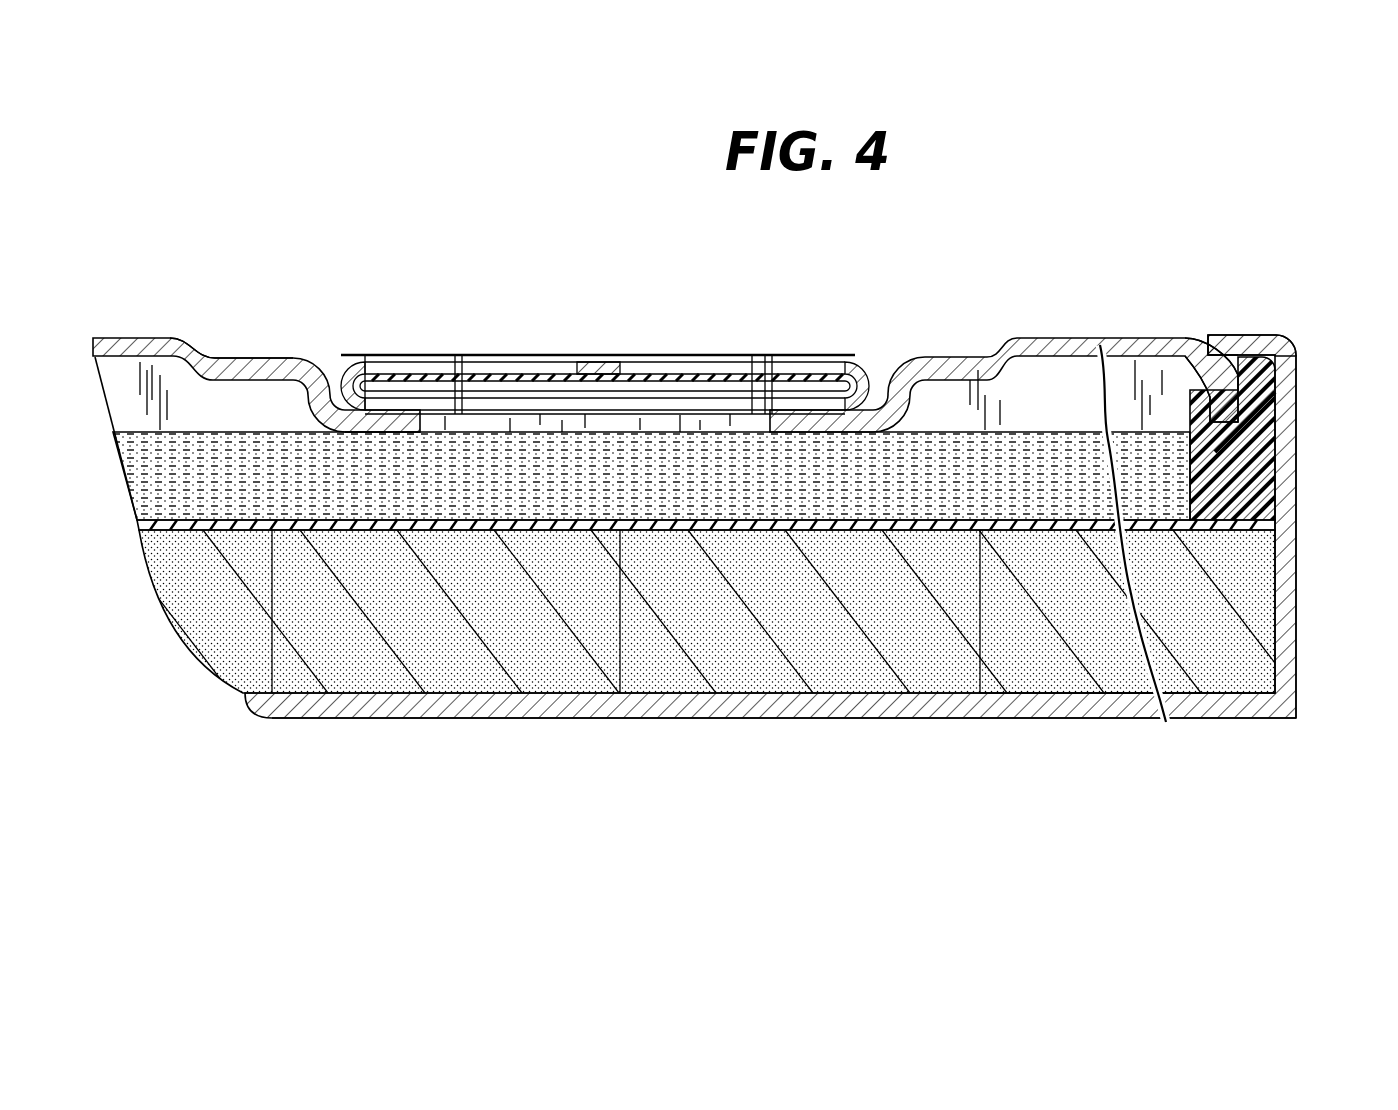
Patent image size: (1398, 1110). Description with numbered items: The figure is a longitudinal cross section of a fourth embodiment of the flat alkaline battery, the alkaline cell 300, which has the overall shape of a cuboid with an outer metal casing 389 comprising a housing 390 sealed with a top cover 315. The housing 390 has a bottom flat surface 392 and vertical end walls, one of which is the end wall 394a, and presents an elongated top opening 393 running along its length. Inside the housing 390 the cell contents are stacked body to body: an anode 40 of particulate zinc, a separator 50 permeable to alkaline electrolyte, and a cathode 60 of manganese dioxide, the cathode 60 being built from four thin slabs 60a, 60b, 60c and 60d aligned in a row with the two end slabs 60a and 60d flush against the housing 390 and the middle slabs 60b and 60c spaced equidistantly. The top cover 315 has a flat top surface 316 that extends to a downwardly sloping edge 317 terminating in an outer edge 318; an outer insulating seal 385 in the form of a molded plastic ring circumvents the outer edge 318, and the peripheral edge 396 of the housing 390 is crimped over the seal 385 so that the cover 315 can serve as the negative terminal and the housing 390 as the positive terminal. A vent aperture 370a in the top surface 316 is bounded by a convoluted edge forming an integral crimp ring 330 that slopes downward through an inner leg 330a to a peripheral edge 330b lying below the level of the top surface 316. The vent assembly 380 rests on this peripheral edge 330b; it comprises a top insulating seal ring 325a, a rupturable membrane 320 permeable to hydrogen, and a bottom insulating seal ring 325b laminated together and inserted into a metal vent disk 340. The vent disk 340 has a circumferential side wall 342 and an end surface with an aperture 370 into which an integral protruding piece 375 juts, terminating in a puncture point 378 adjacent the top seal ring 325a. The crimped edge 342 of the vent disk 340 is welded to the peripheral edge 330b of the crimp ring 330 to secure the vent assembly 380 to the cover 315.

The flat battery (alkaline cell) 300 is at (198, 208).
The convoluted edge / crimp ring 330 is at (145, 335).
The inner leg 330a is at (230, 340).
The peripheral edge 330b is at (345, 425).
The vent disk 340 is at (375, 338).
The top insulating seal ring 325a is at (458, 345).
The bottom insulating seal ring 325b is at (395, 420).
The rupturable membrane 320 is at (530, 428).
The puncture point 378 is at (597, 362).
The protruding piece 375 is at (637, 378).
The aperture 370 is at (705, 391).
The vent aperture 370a is at (528, 430).
The seal assembly / vent assembly 380 is at (822, 355).
The top cover 315 is at (1012, 340).
The flat top surface 316 is at (1100, 345).
The downwardly sloping edge 317 is at (1178, 340).
The top opening 393 is at (1185, 350).
The peripheral edge of housing 396 is at (1237, 337).
The outer insulating seal 385 is at (1262, 397).
The outer edge 318 is at (1232, 433).
The vertical end wall 394a is at (1297, 487).
The housing 390 is at (1297, 605).
The outer metal casing 389 is at (1225, 722).
The bottom flat surface 392 is at (1117, 718).
The anode 40 is at (147, 492).
The separator 50 is at (668, 530).
The cathode 60 is at (758, 667).
The first MnO2 slab (end slab) 60a is at (227, 633).
The second MnO2 slab (middle slab) 60b is at (553, 667).
The third MnO2 slab (middle slab) 60c is at (891, 667).
The fourth MnO2 slab (end slab) 60d is at (1035, 667).
The circumferential side wall / edge of vent disk 342 is at (330, 520).